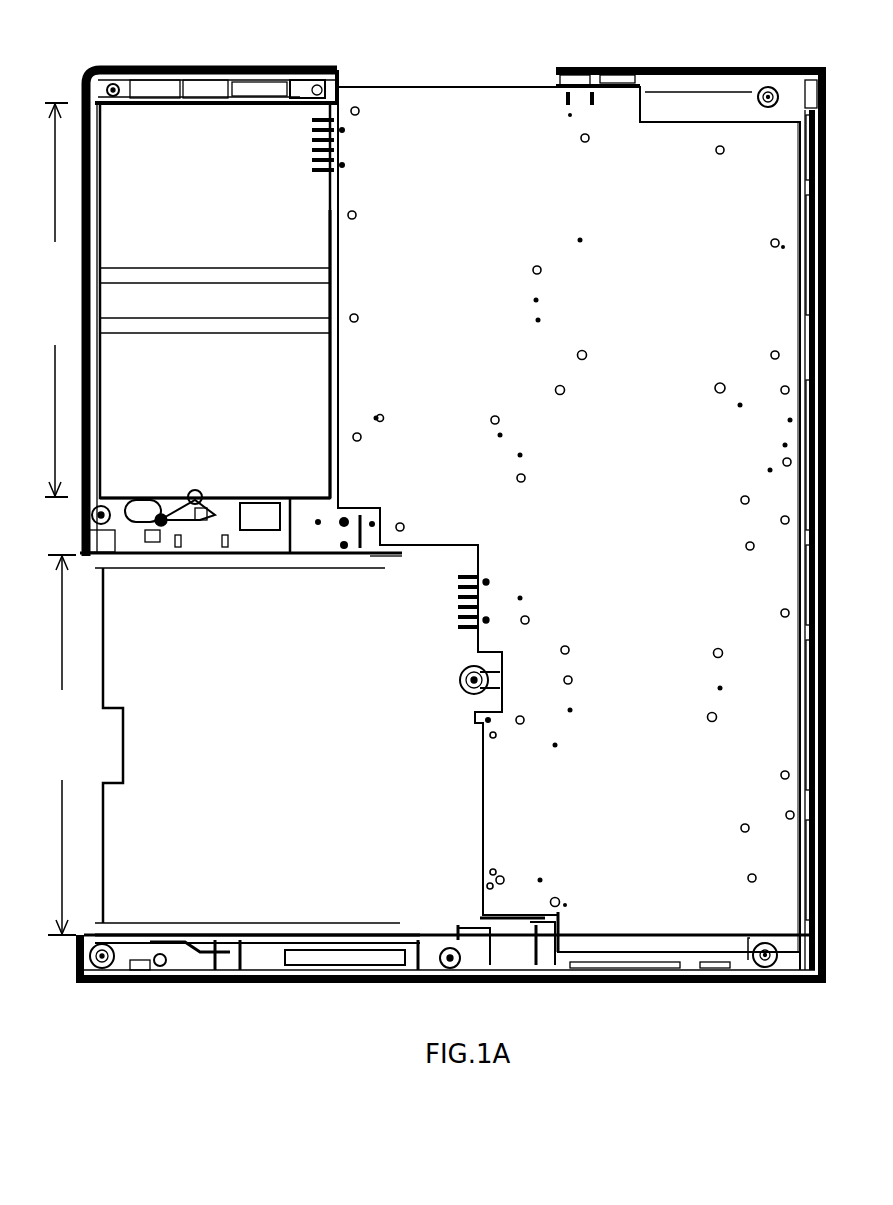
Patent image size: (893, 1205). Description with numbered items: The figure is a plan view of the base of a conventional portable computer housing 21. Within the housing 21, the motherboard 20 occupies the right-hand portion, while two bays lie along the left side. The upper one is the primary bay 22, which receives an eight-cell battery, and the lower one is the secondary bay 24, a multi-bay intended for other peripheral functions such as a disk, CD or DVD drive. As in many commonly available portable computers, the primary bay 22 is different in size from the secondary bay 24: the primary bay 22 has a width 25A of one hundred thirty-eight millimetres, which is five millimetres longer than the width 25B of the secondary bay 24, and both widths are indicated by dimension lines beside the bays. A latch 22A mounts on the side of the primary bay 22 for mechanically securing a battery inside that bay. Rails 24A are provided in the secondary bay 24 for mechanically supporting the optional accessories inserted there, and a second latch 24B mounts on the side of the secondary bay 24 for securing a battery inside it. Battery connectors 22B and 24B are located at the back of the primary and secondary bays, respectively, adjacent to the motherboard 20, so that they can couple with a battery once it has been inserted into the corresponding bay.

The motherboard 20 is at (646, 532).
The housing 21 is at (402, 56).
The primary bay 22 is at (312, 200).
The latch 22A is at (197, 493).
The battery connector 22B is at (318, 152).
The secondary bay 24 is at (286, 752).
The rails 24A is at (345, 565).
The second latch / battery connector 24B is at (462, 612).
The width of primary bay 25A is at (53, 300).
The width of secondary bay 25B is at (59, 745).